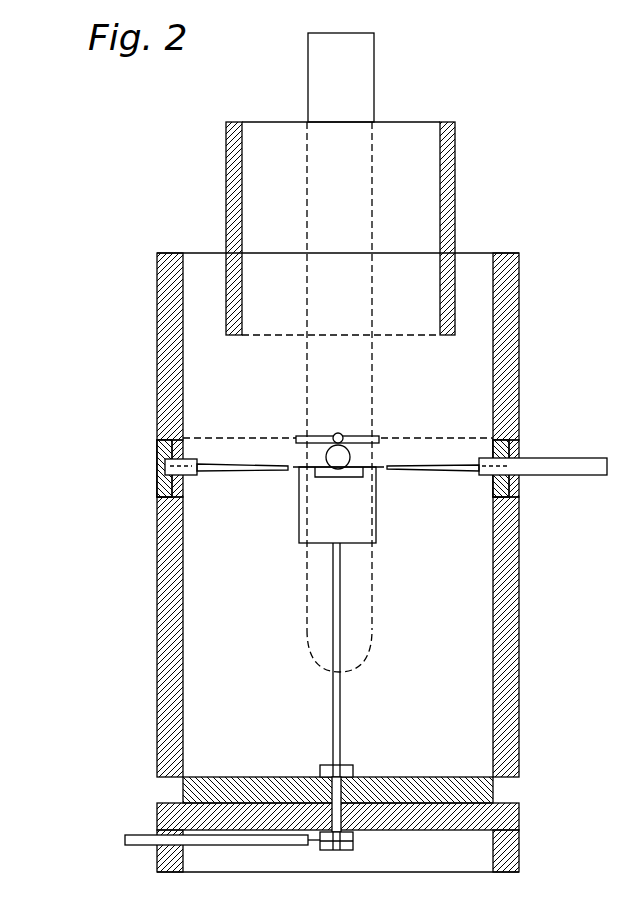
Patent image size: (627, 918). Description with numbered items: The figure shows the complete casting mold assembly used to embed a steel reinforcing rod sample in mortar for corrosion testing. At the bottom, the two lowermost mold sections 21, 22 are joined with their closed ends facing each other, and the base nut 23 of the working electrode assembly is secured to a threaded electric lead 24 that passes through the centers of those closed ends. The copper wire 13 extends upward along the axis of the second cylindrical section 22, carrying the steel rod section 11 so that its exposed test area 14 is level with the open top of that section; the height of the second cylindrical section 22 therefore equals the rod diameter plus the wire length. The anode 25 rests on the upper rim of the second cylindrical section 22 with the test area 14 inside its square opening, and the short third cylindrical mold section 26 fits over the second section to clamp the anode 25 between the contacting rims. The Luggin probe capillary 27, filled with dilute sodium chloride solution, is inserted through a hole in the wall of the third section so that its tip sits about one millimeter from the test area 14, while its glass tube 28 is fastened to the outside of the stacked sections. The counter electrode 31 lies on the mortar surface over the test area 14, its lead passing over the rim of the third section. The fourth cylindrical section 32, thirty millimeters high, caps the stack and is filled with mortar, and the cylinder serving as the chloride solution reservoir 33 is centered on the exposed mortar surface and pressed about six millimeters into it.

The glass tube 28 is at (374, 92).
The chloride solution reservoir 33 is at (455, 181).
The fourth cylindrical section 32 is at (130, 253).
The anode 25 is at (237, 467).
The counter electrode 31 is at (356, 436).
The Luggin probe capillary 27 is at (350, 453).
The third cylindrical mold section 26 is at (130, 450).
The test area 14 is at (355, 478).
The steel rod section 11 is at (377, 530).
The second cylindrical section 22 is at (130, 497).
The copper wire 13 is at (342, 652).
The base nut 23 is at (345, 765).
The threaded electric lead 24 is at (353, 772).
The first mold section 21 is at (130, 805).